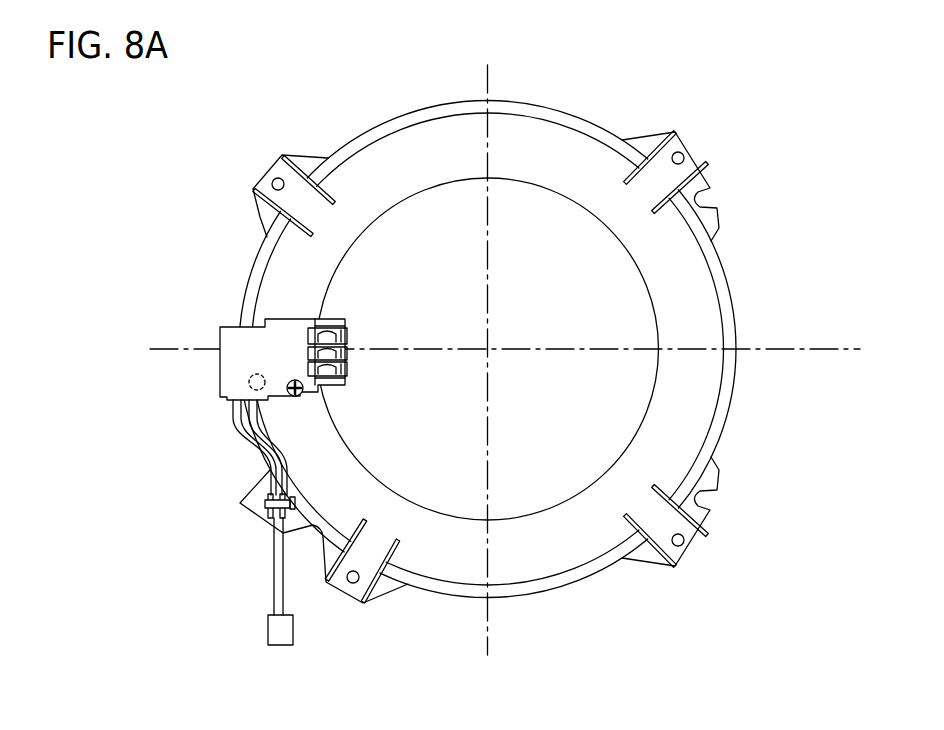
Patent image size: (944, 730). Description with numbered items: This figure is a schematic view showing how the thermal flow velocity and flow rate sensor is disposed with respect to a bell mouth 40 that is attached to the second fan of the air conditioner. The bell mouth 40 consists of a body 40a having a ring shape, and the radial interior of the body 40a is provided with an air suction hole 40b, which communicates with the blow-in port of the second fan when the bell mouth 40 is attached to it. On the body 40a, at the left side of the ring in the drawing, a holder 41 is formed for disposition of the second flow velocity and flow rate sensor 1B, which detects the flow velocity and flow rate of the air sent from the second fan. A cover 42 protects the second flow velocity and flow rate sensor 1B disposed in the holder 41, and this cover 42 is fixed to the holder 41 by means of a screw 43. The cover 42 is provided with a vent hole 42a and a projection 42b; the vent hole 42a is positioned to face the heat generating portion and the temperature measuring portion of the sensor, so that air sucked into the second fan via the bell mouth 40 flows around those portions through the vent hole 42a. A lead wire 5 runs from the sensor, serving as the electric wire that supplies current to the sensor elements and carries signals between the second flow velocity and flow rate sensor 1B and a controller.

The bell mouth 40 is at (523, 379).
The body 40a is at (563, 547).
The air suction hole 40b is at (641, 402).
The holder 41 is at (279, 357).
The cover 42 is at (220, 389).
The vent hole 42a is at (346, 371).
The projection 42b is at (233, 420).
The screw 43 is at (303, 394).
The second flow velocity and flow rate sensor 1B is at (346, 333).
The lead wire 5 is at (274, 576).